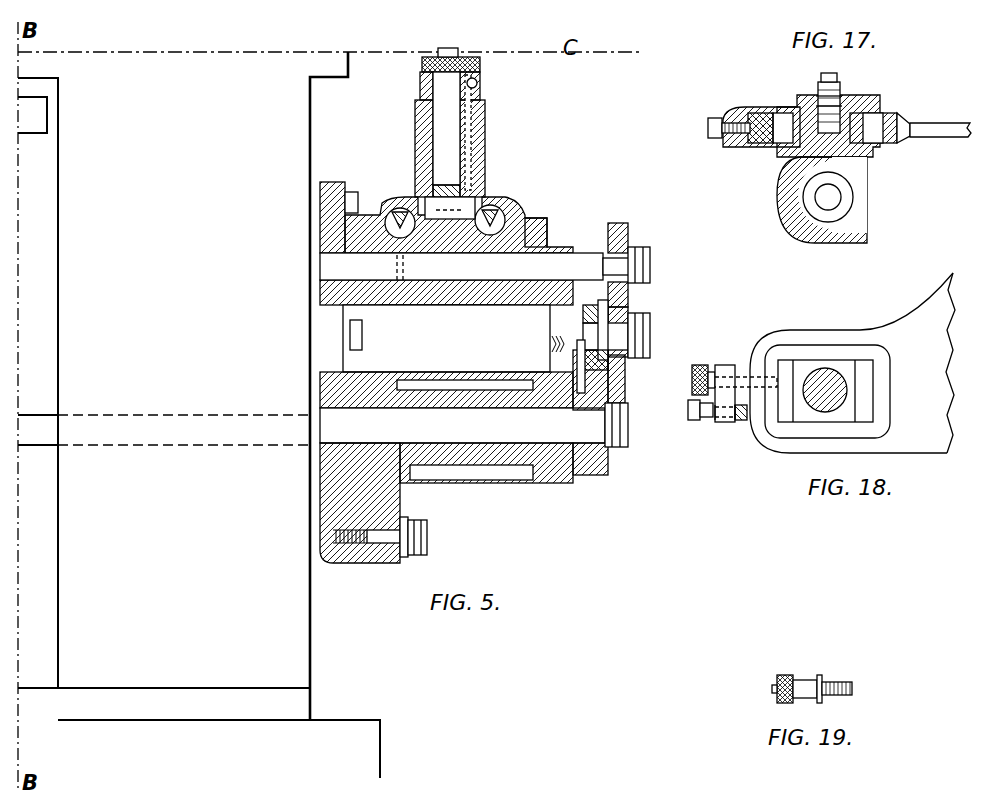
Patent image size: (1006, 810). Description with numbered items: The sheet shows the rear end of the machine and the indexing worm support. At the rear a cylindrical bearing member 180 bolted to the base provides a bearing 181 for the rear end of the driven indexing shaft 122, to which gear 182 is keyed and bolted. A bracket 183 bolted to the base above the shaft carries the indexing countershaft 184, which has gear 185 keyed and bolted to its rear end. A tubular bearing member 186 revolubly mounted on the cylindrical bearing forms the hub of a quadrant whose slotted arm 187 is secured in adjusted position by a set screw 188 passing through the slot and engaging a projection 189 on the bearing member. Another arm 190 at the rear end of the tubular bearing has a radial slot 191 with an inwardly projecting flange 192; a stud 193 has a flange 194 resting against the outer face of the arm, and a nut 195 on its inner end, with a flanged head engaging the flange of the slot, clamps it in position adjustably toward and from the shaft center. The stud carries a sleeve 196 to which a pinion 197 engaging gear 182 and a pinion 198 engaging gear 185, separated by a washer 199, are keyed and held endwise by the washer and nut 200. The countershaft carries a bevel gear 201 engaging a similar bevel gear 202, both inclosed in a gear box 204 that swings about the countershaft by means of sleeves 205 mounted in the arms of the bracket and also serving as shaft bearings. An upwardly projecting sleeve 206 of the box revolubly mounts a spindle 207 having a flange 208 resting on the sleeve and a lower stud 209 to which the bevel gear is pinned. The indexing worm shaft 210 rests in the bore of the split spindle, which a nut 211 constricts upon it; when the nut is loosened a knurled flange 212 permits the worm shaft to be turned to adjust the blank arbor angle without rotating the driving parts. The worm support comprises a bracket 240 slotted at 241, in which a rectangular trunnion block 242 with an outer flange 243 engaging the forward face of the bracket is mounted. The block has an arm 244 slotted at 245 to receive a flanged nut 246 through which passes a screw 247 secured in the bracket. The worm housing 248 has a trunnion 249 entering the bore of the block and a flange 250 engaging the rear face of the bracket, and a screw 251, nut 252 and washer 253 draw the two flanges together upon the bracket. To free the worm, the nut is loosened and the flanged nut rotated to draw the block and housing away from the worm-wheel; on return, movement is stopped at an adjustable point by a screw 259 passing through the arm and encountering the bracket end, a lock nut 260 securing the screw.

In FIG. 5, the driven indexing shaft 122 is at (47, 421).
In FIG. 5, the cylindrical bearing member 180 is at (472, 486).
In FIG. 5, the bearing 181 is at (548, 486).
In FIG. 5, the gear 182 is at (622, 470).
In FIG. 5, the bracket 183 is at (330, 185).
In FIG. 5, the indexing countershaft 184 is at (631, 254).
In FIG. 5, the gear 185 is at (646, 256).
In FIG. 5, the tubular bearing member 186 is at (448, 486).
In FIG. 5, the slotted arm 187 is at (382, 566).
In FIG. 5, the set screw 188 is at (430, 541).
In FIG. 5, the projection 189 is at (350, 577).
In FIG. 5, the arm 190 is at (550, 320).
In FIG. 5, the radial slot 191 is at (545, 352).
In FIG. 5, the inwardly projecting flange 192 is at (630, 296).
In FIG. 5, the stud 193 is at (648, 336).
In FIG. 5, the flange 194 is at (565, 283).
In FIG. 5, the nut 195 is at (552, 346).
In FIG. 5, the sleeve 196 is at (630, 306).
In FIG. 5, the pinion 197 is at (596, 394).
In FIG. 5, the pinion 198 is at (615, 358).
In FIG. 5, the washer 199 is at (608, 372).
In FIG. 5, the washer and nut 200 is at (630, 320).
In FIG. 5, the bevel gear 201 is at (405, 225).
In FIG. 5, the bevel gear 202 is at (492, 216).
In FIG. 5, the gear box 204 is at (422, 322).
In FIG. 5, the sleeves 205 is at (322, 250).
In FIG. 5, the upwardly projecting sleeve 206 is at (415, 125).
In FIG. 5, the spindle 207 is at (467, 120).
In FIG. 5, the flange 208 is at (430, 96).
In FIG. 5, the stud 209 is at (538, 220).
In FIG. 5, the indexing worm shaft 210 is at (440, 85).
In FIG. 5, the nut 211 is at (477, 84).
In FIG. 5, the knurled flange 212 is at (480, 59).
In FIG. 17, the bracket 240 is at (963, 138).
In FIG. 18, the bracket 240 is at (920, 306).
In FIG. 18, the slot 241 is at (868, 360).
In FIG. 17, the trunnion block 242 is at (880, 143).
In FIG. 17, the outer flange 243 is at (893, 113).
In FIG. 17, the arm 244 is at (738, 110).
In FIG. 18, the slot 245 is at (733, 366).
In FIG. 18, the flanged nut 246 is at (712, 366).
In FIG. 19, the flanged nut 246 is at (800, 678).
In FIG. 18, the screw 247 is at (692, 408).
In FIG. 19, the screw 247 is at (772, 689).
In FIG. 17, the worm housing 248 is at (780, 200).
In FIG. 17, the trunnion 249 is at (805, 100).
In FIG. 17, the flange 250 is at (780, 152).
In FIG. 17, the screw 251 is at (838, 77).
In FIG. 17, the nut 252 is at (850, 92).
In FIG. 17, the washer 253 is at (862, 105).
In FIG. 17, the screw 259 is at (708, 127).
In FIG. 18, the screw 259 is at (718, 425).
In FIG. 17, the lock nut 260 is at (720, 140).
In FIG. 18, the lock nut 260 is at (738, 430).